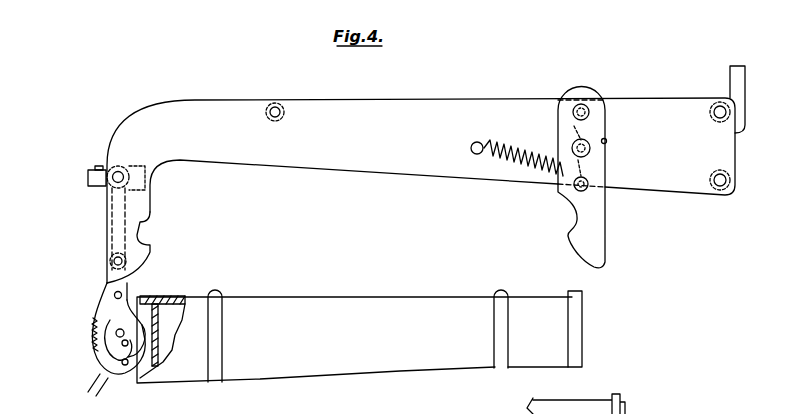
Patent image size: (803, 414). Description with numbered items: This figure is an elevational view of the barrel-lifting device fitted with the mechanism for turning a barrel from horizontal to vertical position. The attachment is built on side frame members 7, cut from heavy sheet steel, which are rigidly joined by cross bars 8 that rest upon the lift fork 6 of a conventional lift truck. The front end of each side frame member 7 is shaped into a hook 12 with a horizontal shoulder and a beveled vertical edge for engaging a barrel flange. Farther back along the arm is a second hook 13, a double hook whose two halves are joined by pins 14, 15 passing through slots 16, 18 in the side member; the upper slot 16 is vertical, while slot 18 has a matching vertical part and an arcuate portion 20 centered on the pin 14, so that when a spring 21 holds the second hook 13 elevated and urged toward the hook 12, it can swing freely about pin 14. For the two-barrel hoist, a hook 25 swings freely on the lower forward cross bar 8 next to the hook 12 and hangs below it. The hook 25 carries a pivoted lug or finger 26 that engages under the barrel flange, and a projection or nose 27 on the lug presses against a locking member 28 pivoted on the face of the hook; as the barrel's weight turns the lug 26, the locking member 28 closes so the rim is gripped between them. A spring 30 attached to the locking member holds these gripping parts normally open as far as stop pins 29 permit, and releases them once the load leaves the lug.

The lift fork 6 is at (745, 76).
The side frame member 7 is at (396, 108).
The cross bar 8 is at (275, 106).
The hook 12 is at (150, 255).
The second hook 13 is at (606, 227).
The pin 14 is at (581, 104).
The pin 15 is at (592, 152).
The slot 16 is at (574, 126).
The slot 18 is at (578, 160).
The arcuate portion 20 is at (606, 142).
The spring 21 is at (535, 178).
The hook 25 is at (103, 305).
The pivoted lug or finger 26 is at (113, 367).
The projection or nose 27 is at (105, 362).
The locking member 28 is at (132, 304).
The stop pin 29 is at (130, 372).
The spring 30 is at (93, 338).